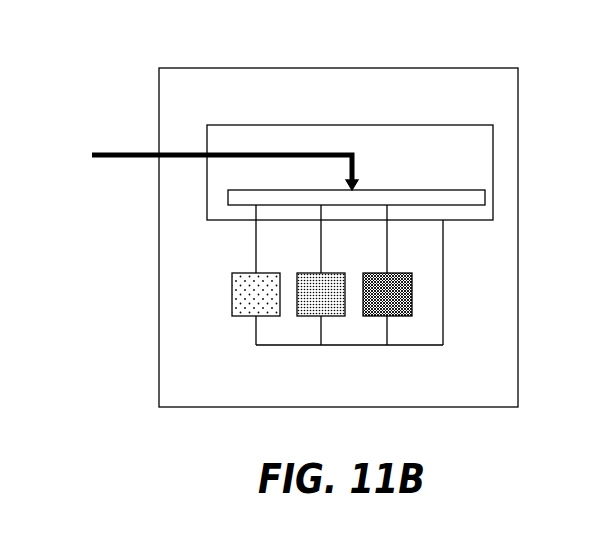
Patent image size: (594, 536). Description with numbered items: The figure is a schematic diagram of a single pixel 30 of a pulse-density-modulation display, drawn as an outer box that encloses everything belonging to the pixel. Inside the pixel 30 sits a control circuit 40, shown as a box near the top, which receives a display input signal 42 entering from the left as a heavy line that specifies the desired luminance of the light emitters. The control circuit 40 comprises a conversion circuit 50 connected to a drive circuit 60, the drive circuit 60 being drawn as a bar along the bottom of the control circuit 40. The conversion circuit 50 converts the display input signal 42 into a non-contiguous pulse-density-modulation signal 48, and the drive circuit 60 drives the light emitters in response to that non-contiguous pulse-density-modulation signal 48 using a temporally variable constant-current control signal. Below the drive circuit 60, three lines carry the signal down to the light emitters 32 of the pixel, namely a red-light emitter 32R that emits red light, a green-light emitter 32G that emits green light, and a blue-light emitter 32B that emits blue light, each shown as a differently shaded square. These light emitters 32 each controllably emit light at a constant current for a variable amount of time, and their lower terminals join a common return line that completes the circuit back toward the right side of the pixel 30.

The pixel 30 is at (402, 68).
The control circuit 40 is at (315, 125).
The display input signal 42 is at (126, 152).
The non-contiguous pulse-density-modulation signal 48 is at (255, 240).
The conversion circuit 50 is at (485, 157).
The drive circuit 60 is at (486, 197).
The light emitter 32 is at (411, 329).
The red-light emitter 32R is at (232, 296).
The green-light emitter 32G is at (340, 317).
The blue-light emitter 32B is at (413, 290).